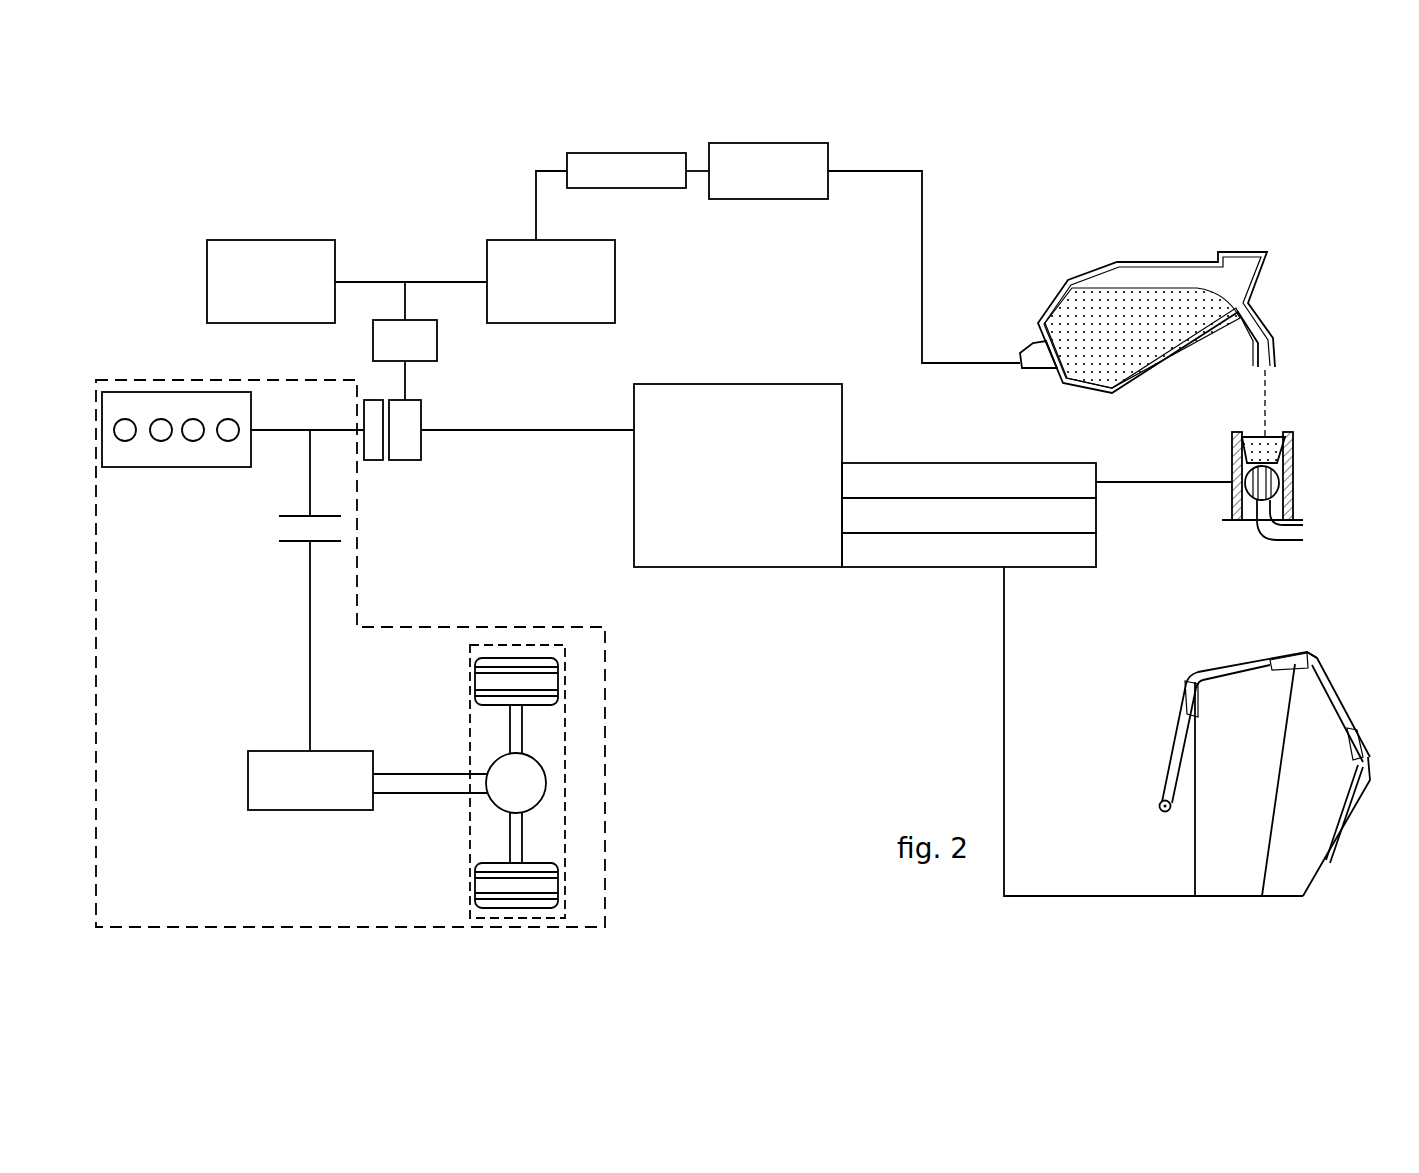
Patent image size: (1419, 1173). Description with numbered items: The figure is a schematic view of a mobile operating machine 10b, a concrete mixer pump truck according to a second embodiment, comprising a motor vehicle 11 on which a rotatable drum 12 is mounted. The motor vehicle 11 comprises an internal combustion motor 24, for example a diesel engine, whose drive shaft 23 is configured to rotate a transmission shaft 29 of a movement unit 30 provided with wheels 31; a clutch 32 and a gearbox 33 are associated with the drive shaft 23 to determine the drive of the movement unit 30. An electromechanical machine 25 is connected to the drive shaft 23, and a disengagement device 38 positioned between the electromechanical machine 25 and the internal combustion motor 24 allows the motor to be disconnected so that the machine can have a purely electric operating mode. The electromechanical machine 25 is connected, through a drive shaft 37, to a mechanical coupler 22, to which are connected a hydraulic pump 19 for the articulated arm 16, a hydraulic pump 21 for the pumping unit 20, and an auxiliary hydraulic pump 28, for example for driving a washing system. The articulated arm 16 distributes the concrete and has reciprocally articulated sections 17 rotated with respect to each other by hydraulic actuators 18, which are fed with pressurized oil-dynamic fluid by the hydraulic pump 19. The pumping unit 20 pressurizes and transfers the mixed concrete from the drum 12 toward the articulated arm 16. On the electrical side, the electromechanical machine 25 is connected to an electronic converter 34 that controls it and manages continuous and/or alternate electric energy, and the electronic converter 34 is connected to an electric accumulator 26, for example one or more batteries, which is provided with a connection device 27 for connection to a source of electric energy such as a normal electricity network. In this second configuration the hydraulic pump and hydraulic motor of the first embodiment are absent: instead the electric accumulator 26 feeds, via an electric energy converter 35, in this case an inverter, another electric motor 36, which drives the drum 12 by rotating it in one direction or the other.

The mobile operating machine 10b is at (130, 255).
The motor vehicle 11 is at (301, 376).
The rotatable drum 12 is at (1103, 254).
The articulated arm 16 is at (1358, 828).
The articulated sections 17 is at (1222, 666).
The hydraulic actuators 18 is at (1282, 667).
The hydraulic pump 19 is at (1076, 550).
The pumping unit 20 is at (1310, 435).
The hydraulic pump 21 is at (891, 486).
The mechanical coupler 22 is at (754, 491).
The drive shaft 23 is at (335, 432).
The internal combustion motor 24 is at (134, 404).
The electromechanical machine 25 is at (419, 441).
The electric accumulator 26 is at (567, 294).
The connection device 27 is at (287, 294).
The auxiliary hydraulic pump 28 is at (963, 512).
The transmission shaft 29 is at (308, 607).
The movement unit 30 is at (576, 795).
The wheels 31 is at (543, 681).
The clutch 32 is at (290, 544).
The gearbox 33 is at (326, 792).
The electronic converter 34 is at (421, 352).
The electric energy converter 35 is at (642, 183).
The electric motor 36 is at (784, 183).
The drive shaft 37 is at (527, 428).
The disengagement device 38 is at (373, 447).